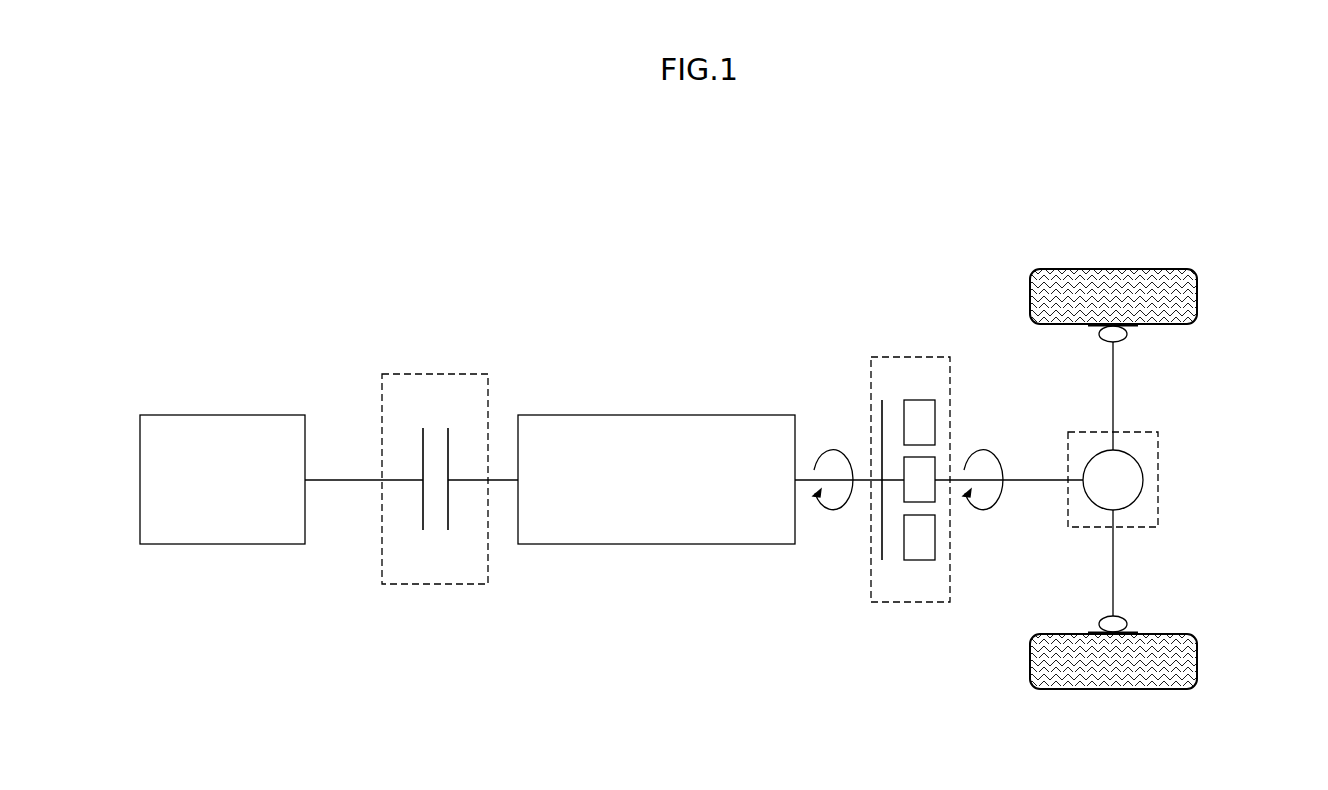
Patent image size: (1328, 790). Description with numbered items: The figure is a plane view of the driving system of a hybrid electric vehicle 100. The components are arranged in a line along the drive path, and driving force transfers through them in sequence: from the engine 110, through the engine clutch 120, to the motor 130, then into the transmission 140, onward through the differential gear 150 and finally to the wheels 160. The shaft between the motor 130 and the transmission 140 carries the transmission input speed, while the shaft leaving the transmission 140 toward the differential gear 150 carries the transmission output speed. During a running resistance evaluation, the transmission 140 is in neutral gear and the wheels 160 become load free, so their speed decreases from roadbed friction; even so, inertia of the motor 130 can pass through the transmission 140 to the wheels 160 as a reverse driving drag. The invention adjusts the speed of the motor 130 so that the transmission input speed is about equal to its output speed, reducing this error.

The vehicle 100 is at (637, 289).
The engine 110 is at (223, 413).
The engine clutch 120 is at (433, 374).
The motor 130 is at (734, 413).
The transmission 140 is at (910, 355).
The differential gear 150 is at (1159, 478).
The wheels 160 is at (1168, 269).